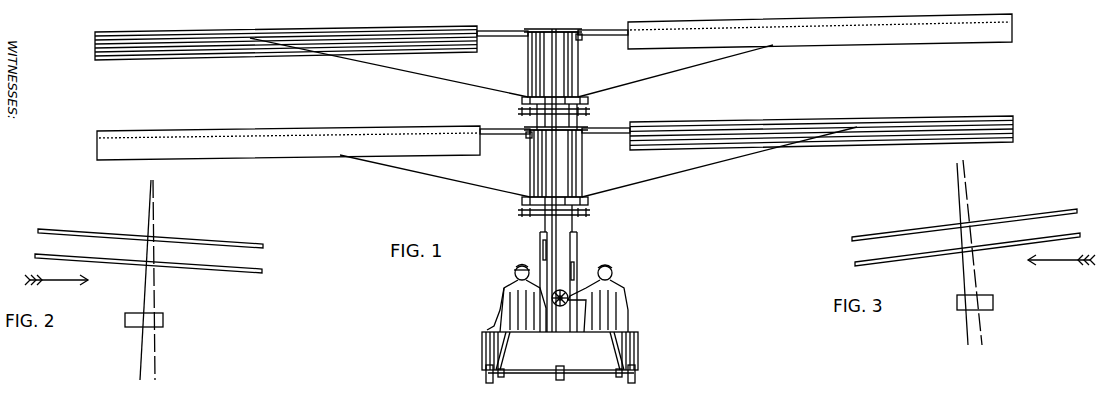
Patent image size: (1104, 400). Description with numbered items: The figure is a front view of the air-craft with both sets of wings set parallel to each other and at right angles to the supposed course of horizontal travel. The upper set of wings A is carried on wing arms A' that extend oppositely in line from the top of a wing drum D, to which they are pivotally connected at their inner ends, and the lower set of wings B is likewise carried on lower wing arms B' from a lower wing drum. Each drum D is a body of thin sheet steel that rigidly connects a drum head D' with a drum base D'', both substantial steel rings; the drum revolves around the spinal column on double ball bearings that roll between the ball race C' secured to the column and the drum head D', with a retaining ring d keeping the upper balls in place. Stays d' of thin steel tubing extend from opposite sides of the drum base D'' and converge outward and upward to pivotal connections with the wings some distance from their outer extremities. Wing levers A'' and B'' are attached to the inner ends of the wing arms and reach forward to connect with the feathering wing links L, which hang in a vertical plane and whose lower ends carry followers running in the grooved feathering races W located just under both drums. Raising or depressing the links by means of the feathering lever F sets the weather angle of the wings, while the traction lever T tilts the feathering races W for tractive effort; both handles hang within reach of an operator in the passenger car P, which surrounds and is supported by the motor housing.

The upper set of wings A is at (553, 44).
The wing arms A' is at (552, 26).
The wing levers A'' is at (553, 24).
The lower set of wings B is at (555, 144).
The lower wing arms B' is at (555, 124).
The lower wing levers B'' is at (562, 137).
The ball race C' is at (567, 168).
The wing drum D is at (554, 114).
The drum head D' is at (557, 93).
The drum base D'' is at (557, 152).
The feathering race W is at (516, 111).
The feathering wing links L is at (556, 70).
The feathering lever F is at (541, 250).
The traction lever T is at (578, 283).
The passenger car P is at (560, 357).
The retaining ring d is at (553, 117).
The stay d' is at (556, 121).